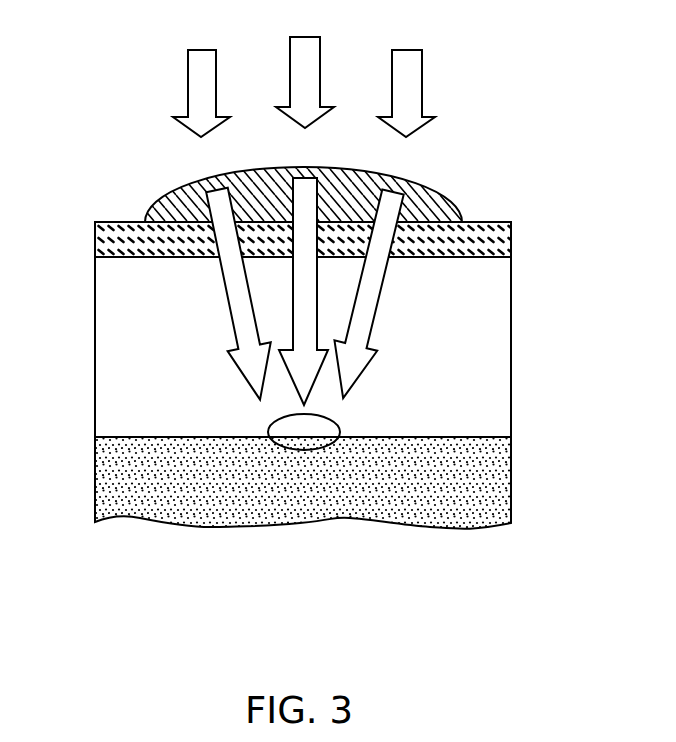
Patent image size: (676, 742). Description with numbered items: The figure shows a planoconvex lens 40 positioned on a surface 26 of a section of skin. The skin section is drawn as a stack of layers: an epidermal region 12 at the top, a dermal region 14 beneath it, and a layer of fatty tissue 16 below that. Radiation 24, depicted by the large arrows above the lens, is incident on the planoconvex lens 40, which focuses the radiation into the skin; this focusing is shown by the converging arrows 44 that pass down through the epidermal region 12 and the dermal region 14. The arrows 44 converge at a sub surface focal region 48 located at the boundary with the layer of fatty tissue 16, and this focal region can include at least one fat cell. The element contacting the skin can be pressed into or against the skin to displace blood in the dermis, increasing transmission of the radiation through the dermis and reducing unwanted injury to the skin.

The epidermal region 12 is at (487, 243).
The dermal region 14 is at (487, 352).
The layer of fatty tissue 16 is at (95, 484).
The radiation 24 is at (423, 52).
The surface 26 is at (487, 221).
The planoconvex lens 40 is at (418, 186).
The arrows 44 is at (208, 186).
The sub surface focal region 48 is at (283, 441).